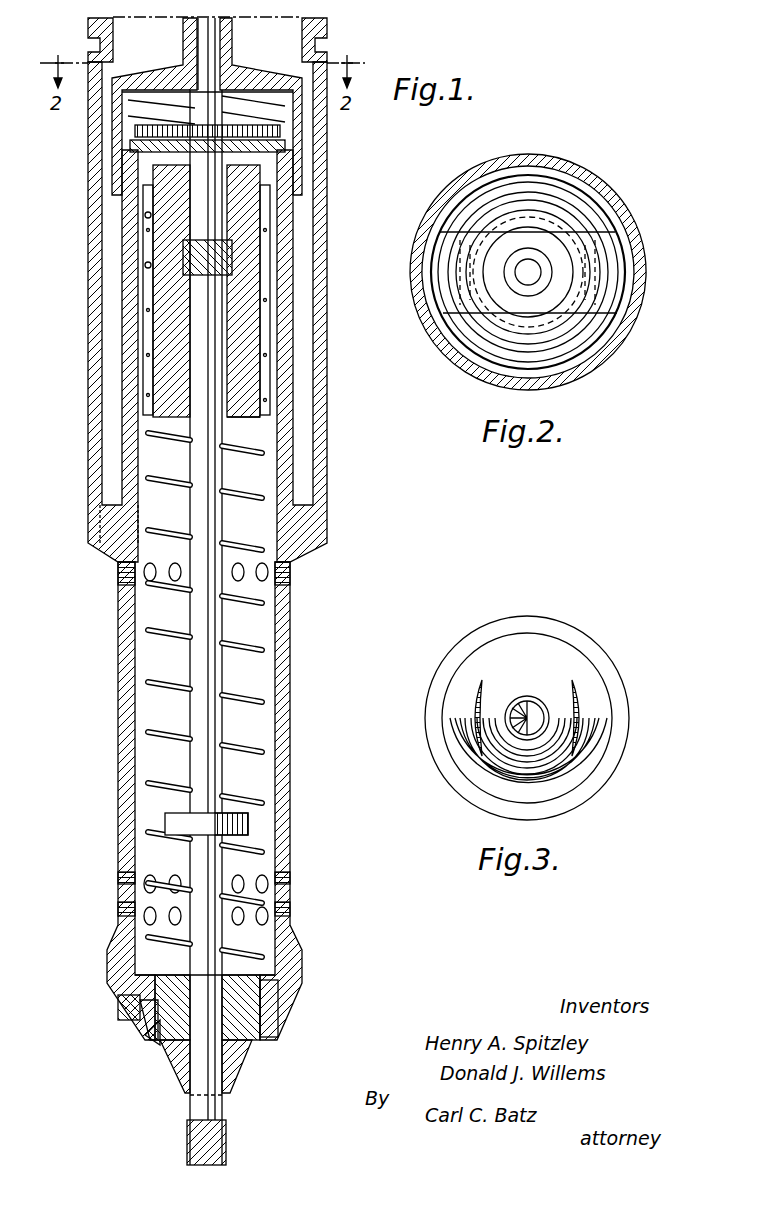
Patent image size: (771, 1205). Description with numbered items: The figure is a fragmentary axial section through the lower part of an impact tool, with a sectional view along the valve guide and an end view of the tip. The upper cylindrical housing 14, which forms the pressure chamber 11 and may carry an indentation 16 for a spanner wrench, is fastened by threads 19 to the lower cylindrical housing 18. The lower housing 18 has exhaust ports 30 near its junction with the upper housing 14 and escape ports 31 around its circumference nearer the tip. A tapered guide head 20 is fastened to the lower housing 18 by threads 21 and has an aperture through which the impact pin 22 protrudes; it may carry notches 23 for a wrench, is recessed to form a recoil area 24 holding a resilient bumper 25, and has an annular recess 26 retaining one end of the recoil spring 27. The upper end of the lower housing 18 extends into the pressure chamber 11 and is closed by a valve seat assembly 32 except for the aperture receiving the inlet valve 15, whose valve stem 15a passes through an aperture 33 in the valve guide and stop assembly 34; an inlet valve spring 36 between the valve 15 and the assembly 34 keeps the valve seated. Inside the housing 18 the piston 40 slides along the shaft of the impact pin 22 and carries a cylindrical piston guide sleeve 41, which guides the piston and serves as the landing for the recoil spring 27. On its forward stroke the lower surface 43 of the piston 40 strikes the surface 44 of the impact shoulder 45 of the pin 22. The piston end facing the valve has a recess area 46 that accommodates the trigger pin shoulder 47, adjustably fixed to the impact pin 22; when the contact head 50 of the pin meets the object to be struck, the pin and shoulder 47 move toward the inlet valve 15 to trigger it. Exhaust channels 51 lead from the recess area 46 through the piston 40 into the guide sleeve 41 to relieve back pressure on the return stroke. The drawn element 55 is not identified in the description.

In FIG. 1, the pressure chamber 11 is at (328, 30).
In FIG. 2, the pressure chamber 11 is at (622, 313).
In FIG. 1, the upper cylindrical housing 14 is at (327, 350).
In FIG. 2, the upper cylindrical housing 14 is at (625, 350).
In FIG. 1, the inlet valve 15 is at (300, 135).
In FIG. 2, the inlet valve 15 is at (565, 218).
In FIG. 1, the valve stem 15a is at (222, 45).
In FIG. 2, the valve stem 15a is at (540, 268).
In FIG. 1, the indentation 16 is at (88, 38).
In FIG. 1, the lower cylindrical housing 18 is at (290, 672).
In FIG. 3, the lower cylindrical housing 18 is at (548, 618).
In FIG. 1, the threads 19 is at (105, 530).
In FIG. 1, the guide head 20 is at (268, 1040).
In FIG. 3, the guide head 20 is at (560, 668).
In FIG. 1, the threads 21 is at (282, 1000).
In FIG. 1, the impact pin 22 is at (220, 532).
In FIG. 3, the impact pin 22 is at (555, 738).
In FIG. 1, the notches 23 is at (255, 1052).
In FIG. 3, the notches 23 is at (470, 740).
In FIG. 1, the recoil area 24 is at (150, 1020).
In FIG. 1, the bumper 25 is at (152, 1040).
In FIG. 1, the annular recess 26 is at (125, 1008).
In FIG. 1, the recoil spring 27 is at (150, 735).
In FIG. 1, the exhaust ports 30 is at (292, 578).
In FIG. 1, the escape ports 31 is at (292, 912).
In FIG. 1, the valve seat assembly 32 is at (298, 160).
In FIG. 1, the aperture 33 is at (148, 110).
In FIG. 2, the aperture 33 is at (505, 292).
In FIG. 1, the valve guide and stop assembly 34 is at (112, 125).
In FIG. 2, the valve guide and stop assembly 34 is at (612, 296).
In FIG. 1, the inlet valve spring 36 is at (155, 92).
In FIG. 2, the inlet valve spring 36 is at (550, 200).
In FIG. 1, the piston 40 is at (175, 417).
In FIG. 1, the piston guide sleeve 41 is at (148, 245).
In FIG. 1, the surface 43 is at (236, 417).
In FIG. 1, the surface 44 is at (175, 812).
In FIG. 1, the impact shoulder 45 is at (165, 825).
In FIG. 1, the recess area 46 is at (145, 222).
In FIG. 1, the trigger pin shoulder 47 is at (148, 265).
In FIG. 1, the contact head 50 is at (226, 1160).
In FIG. 3, the contact head 50 is at (515, 745).
In FIG. 1, the exhaust channels 51 is at (235, 255).
In FIG. 1, the chamber floor 55 is at (265, 945).